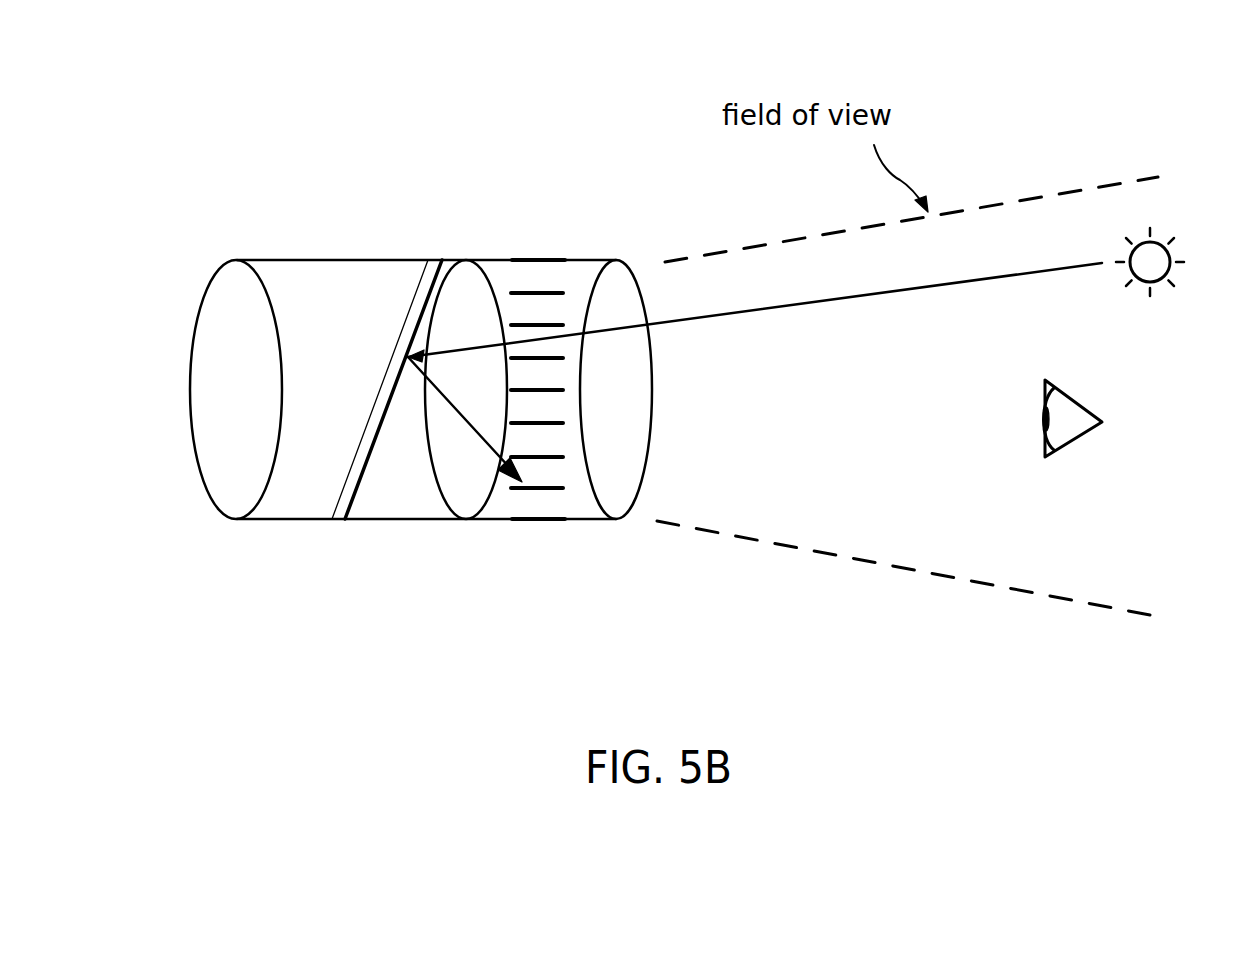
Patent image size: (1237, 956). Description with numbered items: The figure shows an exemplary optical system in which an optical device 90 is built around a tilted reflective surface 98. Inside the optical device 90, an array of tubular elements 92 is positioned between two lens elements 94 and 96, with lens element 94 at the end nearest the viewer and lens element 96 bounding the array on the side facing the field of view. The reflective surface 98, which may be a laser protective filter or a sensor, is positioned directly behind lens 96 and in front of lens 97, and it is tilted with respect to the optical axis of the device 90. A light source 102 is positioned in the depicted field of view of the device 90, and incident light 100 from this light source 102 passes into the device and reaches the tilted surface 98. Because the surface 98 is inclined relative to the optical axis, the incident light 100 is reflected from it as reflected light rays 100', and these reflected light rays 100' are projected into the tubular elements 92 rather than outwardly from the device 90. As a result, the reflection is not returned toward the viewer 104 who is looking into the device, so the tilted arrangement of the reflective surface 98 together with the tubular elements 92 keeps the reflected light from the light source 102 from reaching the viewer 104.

The optical device 90 is at (338, 260).
The array of tubular elements 92 is at (552, 447).
The lens element 94 is at (626, 518).
The lens element 96 is at (462, 272).
The lens 97 is at (240, 520).
The reflective surface 98 is at (412, 278).
The incident light 100 is at (755, 316).
The reflected light rays 100' is at (401, 476).
The light source 102 is at (1148, 288).
The viewer 104 is at (1085, 437).